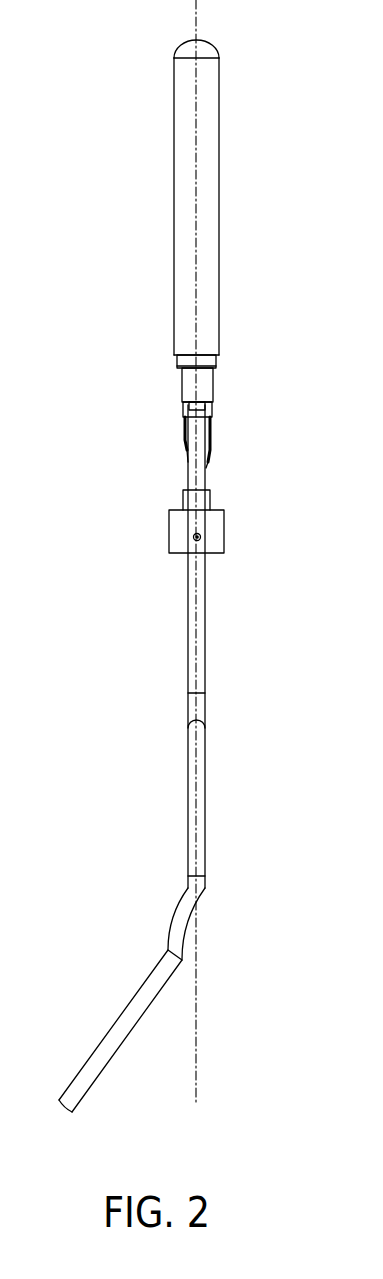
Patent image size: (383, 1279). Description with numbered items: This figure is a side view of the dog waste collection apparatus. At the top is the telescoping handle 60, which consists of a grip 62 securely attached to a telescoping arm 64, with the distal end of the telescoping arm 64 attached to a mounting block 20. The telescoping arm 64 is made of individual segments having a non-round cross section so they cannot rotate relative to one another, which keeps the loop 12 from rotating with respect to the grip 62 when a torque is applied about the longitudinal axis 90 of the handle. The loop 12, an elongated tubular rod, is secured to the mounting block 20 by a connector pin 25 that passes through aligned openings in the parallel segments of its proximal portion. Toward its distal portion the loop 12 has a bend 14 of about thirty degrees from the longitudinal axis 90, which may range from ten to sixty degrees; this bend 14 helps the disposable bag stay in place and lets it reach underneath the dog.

The loop 12 is at (207, 825).
The bend 14 is at (198, 920).
The mounting block 20 is at (224, 535).
The connector pin 25 is at (191, 537).
The telescoping handle 60 is at (253, 221).
The grip 62 is at (218, 125).
The telescoping arm 64 is at (213, 408).
The longitudinal axis 90 is at (197, 10).